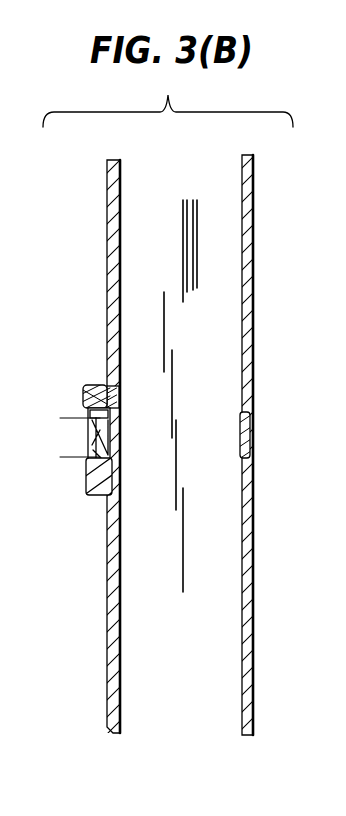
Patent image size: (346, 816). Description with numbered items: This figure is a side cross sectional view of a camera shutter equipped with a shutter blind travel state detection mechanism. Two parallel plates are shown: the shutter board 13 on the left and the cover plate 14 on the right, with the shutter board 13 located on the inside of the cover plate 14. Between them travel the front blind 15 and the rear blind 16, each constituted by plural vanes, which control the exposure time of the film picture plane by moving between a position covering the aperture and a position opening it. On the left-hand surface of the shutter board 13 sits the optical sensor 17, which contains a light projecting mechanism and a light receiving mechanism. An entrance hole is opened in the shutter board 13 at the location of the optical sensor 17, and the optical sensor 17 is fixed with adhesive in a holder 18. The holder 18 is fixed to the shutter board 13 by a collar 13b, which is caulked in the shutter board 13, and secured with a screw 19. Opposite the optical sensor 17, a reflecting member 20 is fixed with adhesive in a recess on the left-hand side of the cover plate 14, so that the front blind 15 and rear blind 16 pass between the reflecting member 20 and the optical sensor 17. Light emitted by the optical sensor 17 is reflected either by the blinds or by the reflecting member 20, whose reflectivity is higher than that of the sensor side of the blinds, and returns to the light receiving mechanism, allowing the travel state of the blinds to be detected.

The shutter board 13 is at (106, 218).
The collar 13b is at (108, 393).
The cover plate 14 is at (254, 333).
The front blind 15 is at (166, 295).
The rear blind 16 is at (185, 201).
The optical sensor 17 is at (88, 440).
The holder 18 is at (88, 490).
The screw 19 is at (84, 397).
The reflecting member 20 is at (251, 433).